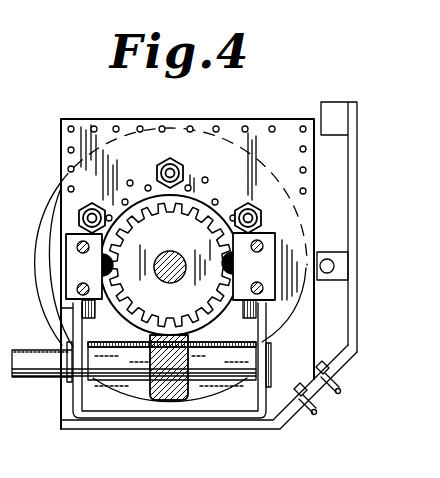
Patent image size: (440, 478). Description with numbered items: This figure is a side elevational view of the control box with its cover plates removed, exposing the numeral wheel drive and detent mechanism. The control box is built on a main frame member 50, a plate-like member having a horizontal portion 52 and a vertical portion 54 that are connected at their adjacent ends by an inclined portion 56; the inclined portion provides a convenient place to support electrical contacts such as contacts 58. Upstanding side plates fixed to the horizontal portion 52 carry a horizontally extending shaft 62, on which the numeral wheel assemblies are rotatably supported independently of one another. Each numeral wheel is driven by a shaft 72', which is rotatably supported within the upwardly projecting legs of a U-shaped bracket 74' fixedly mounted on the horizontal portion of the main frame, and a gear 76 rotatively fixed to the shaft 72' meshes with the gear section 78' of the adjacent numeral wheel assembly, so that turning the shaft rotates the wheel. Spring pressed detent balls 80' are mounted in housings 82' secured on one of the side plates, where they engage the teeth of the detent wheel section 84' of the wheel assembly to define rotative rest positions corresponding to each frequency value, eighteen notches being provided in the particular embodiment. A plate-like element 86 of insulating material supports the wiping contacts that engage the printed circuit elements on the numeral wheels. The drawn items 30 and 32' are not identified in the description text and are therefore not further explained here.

The drive shaft 30 is at (48, 307).
The mounting nut 32' is at (130, 195).
The main frame member 50 is at (262, 432).
The horizontal portion 52 is at (168, 428).
The vertical portion 54 is at (353, 199).
The inclined portion 56 is at (340, 371).
The electrical contacts 58 is at (312, 414).
The shaft 62 is at (179, 258).
The shaft 72' is at (179, 364).
The U-shaped bracket 74' is at (148, 359).
The gear 76 is at (162, 353).
The gear section 78' is at (170, 256).
The spring pressed detent balls 80' is at (183, 264).
The housings 82' is at (177, 258).
The detent wheel section 84' is at (170, 264).
The plate-like element 86 is at (252, 125).